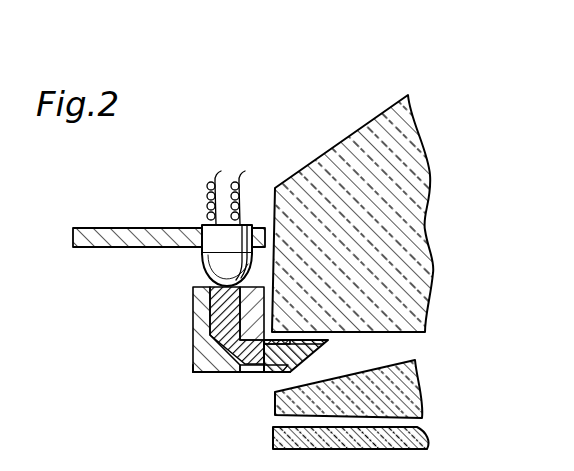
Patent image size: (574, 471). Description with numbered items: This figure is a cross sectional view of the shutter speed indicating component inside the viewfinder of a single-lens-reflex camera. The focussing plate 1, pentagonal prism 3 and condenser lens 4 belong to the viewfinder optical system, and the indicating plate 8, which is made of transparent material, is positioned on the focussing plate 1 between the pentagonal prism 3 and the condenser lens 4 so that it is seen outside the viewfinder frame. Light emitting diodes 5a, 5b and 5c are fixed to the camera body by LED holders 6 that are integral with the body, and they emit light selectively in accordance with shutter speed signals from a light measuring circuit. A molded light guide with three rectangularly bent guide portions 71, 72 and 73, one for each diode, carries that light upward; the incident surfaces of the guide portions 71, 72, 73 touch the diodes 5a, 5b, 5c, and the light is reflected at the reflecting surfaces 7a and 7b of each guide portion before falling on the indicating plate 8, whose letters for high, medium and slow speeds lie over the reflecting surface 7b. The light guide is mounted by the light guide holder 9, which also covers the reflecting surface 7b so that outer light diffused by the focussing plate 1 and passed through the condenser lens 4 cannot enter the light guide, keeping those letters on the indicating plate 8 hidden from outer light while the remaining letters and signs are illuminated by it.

The focussing plate 1 is at (410, 441).
The pentagonal prism 3 is at (405, 277).
The condenser lens 4 is at (400, 397).
The light emitting diode 5a is at (160, 193).
The light emitting diode 5b is at (172, 198).
The light emitting diode 5c is at (202, 227).
The LED holder 6 is at (77, 248).
The guide portion 71 is at (193, 322).
The guide portion 72 is at (198, 325).
The guide portion 73 is at (185, 333).
The reflecting surface 7a is at (230, 373).
The reflecting surface 7b is at (268, 373).
The indicating plate 8 is at (330, 339).
The light guide holder 9 is at (195, 373).